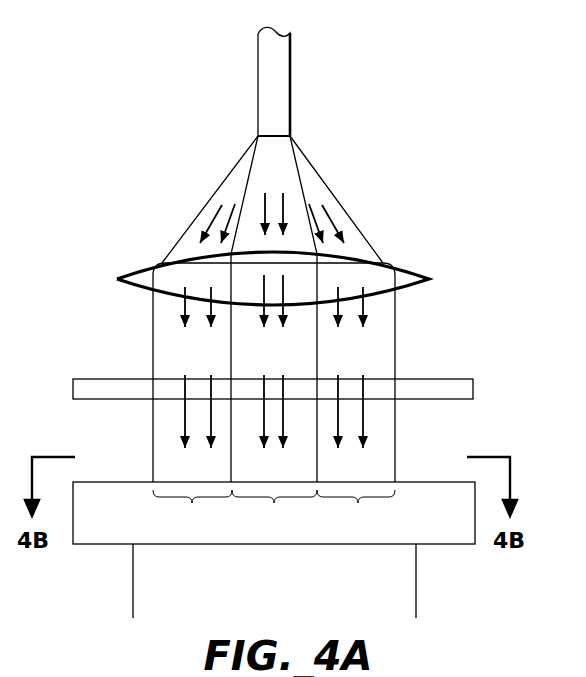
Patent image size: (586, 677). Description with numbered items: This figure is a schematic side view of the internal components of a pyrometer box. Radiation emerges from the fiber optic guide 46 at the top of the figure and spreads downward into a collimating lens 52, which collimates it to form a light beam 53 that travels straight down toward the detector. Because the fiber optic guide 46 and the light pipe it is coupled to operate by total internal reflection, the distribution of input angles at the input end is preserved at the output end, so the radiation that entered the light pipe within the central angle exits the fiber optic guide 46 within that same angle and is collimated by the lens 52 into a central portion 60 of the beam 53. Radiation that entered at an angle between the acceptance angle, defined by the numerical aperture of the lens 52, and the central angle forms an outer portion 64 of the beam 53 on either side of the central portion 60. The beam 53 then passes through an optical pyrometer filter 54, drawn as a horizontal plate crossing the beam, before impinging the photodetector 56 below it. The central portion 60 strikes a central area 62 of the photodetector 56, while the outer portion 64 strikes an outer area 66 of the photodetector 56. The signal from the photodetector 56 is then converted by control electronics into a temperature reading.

The fiber optic guide 46 is at (272, 68).
The collimating lens 52 is at (405, 272).
The light beam 53 is at (395, 318).
The optical pyrometer filter 54 is at (73, 389).
The photodetector 56 is at (433, 545).
The central portion of beam 60 is at (262, 365).
The central area of photodetector 62 is at (274, 509).
The outer portion of beam 64 is at (184, 365).
The outer area of photodetector 66 is at (274, 509).